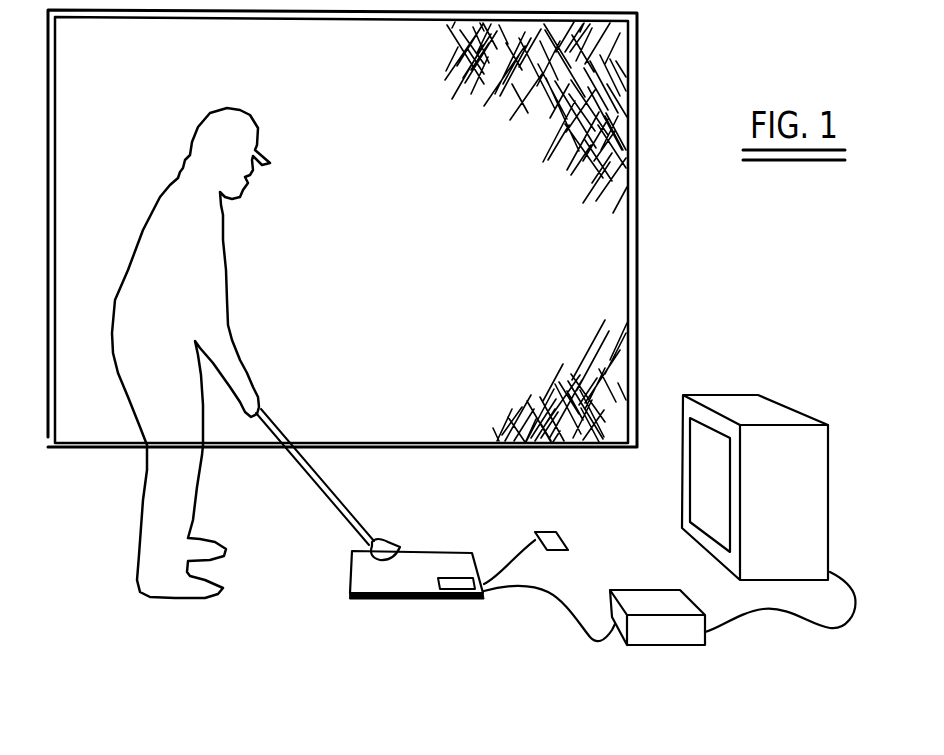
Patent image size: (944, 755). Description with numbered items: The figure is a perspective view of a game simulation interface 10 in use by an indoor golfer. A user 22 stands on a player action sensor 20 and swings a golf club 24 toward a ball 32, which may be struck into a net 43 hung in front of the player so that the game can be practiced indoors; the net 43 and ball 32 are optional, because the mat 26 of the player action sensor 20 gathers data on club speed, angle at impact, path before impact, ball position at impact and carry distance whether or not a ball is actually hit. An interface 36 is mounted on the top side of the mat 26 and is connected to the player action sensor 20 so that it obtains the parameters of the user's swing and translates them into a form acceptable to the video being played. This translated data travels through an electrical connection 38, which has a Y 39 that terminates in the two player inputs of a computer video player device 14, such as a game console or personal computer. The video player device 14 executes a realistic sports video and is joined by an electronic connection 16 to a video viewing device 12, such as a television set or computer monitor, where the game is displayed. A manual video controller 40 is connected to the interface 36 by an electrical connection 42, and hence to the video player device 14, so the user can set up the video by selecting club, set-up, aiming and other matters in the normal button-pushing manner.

The game simulation interface 10 is at (418, 612).
The video viewing device 12 is at (755, 410).
The computer video player device 14 is at (662, 630).
The electronic connection 16 is at (780, 612).
The player action sensor 20 is at (368, 578).
The user 22 is at (188, 291).
The golf club 24 is at (320, 497).
The mat 26 is at (382, 598).
The ball 32 is at (386, 538).
The interface 36 is at (456, 589).
The electrical connection 38 is at (545, 590).
The Y 39 is at (580, 630).
The manual video controller 40 is at (560, 540).
The electrical connection 42 is at (504, 565).
The net 43 is at (398, 229).